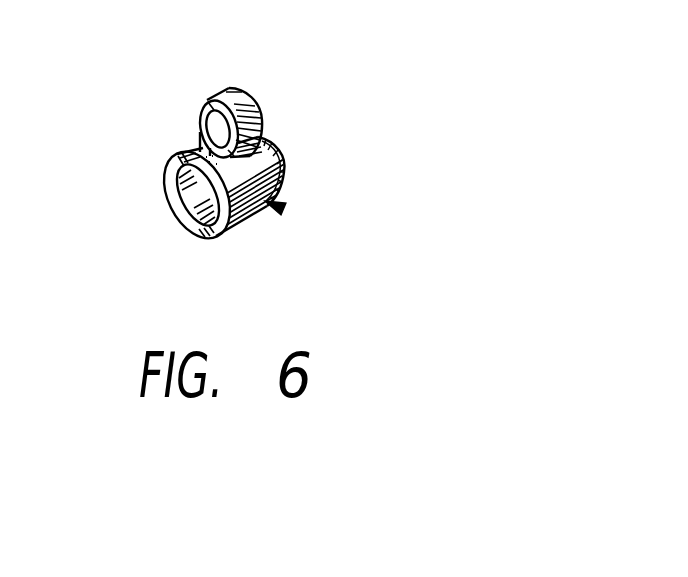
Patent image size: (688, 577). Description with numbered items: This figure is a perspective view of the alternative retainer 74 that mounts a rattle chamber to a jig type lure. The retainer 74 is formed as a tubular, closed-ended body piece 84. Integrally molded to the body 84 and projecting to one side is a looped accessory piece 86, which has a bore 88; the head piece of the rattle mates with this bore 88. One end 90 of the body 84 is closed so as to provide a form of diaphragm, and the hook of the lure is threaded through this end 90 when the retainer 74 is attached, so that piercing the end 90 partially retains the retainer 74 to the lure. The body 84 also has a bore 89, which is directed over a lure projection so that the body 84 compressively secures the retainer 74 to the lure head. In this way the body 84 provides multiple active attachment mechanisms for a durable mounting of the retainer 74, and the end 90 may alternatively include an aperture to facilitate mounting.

The body piece 84 is at (256, 222).
The looped accessory piece 86 is at (242, 92).
The bore 88 is at (203, 117).
The bore 89 is at (193, 211).
The end 90 is at (284, 172).
The retainer 74 is at (284, 207).